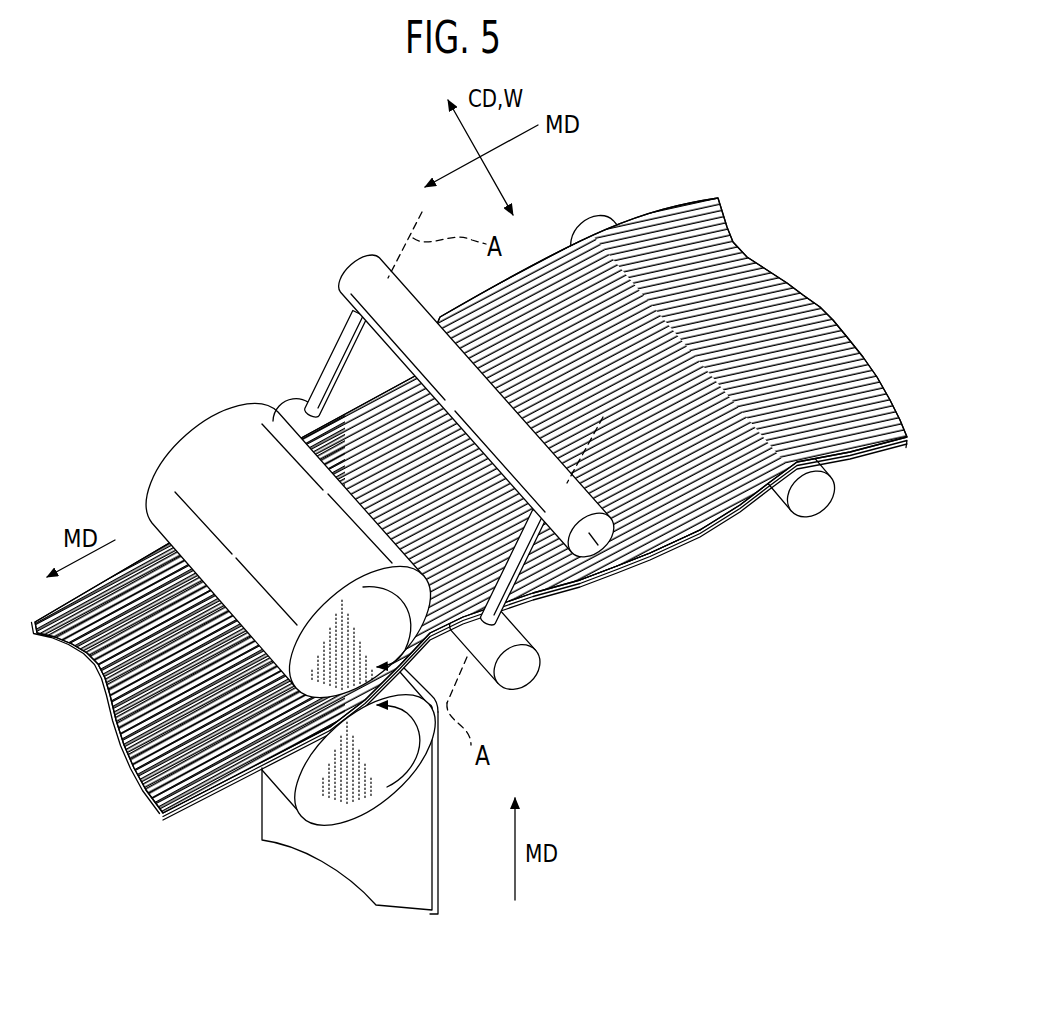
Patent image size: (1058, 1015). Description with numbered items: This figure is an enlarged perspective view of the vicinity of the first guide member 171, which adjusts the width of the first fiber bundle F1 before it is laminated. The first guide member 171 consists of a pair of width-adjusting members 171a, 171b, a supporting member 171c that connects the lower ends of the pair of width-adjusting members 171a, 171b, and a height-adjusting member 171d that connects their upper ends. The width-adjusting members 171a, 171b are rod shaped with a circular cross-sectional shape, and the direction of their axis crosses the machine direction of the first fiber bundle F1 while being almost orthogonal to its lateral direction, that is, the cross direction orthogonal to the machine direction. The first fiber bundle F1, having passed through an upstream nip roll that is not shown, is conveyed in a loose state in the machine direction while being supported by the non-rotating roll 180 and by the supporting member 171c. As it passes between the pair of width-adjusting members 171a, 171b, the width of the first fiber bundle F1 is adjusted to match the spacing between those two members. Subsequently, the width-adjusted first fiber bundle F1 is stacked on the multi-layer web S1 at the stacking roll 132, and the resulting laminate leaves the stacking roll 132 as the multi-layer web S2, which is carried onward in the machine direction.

The first guide member 171 is at (343, 230).
The width-adjusting member 171a is at (520, 570).
The width-adjusting member 171b is at (337, 358).
The supporting member 171c is at (520, 667).
The height-adjusting member 171d is at (628, 566).
The stacking roll 132 is at (213, 470).
The non-rotating roll 180 is at (817, 497).
The first fiber bundle F1 is at (681, 243).
The multi-layer web S1 is at (368, 864).
The multi-layer web S2 is at (128, 768).